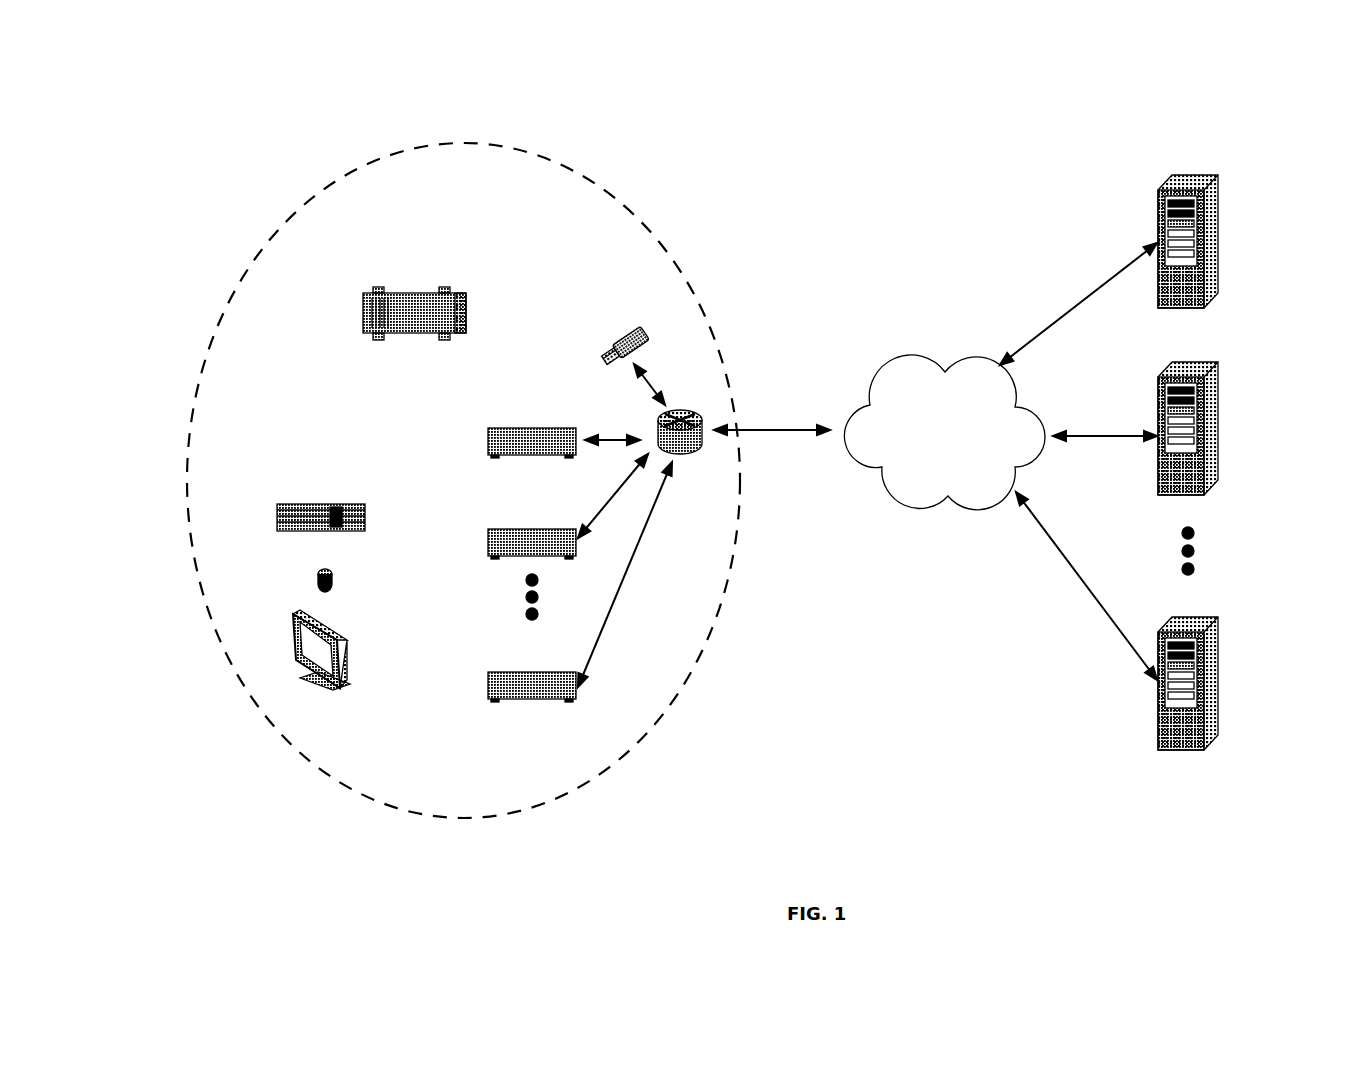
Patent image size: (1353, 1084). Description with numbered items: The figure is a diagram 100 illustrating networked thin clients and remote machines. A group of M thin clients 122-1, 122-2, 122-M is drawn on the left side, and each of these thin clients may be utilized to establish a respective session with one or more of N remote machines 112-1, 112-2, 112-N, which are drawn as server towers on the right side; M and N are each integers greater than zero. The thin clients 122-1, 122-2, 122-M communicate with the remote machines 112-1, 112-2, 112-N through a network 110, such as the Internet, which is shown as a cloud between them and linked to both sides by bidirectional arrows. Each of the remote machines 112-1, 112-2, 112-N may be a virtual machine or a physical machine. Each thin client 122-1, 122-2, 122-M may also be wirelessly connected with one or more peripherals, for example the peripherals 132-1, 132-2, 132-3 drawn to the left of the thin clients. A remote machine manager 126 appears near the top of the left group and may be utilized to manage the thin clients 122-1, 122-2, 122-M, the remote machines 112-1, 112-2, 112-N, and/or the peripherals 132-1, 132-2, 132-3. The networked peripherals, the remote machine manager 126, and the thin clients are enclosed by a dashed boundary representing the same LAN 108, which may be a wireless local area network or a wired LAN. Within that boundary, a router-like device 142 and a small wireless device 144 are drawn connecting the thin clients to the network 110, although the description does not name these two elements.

The diagram 100 is at (142, 124).
The LAN 108 is at (628, 210).
The network 110 is at (927, 360).
The remote machine 112-1 is at (1220, 213).
The remote machine 112-2 is at (1220, 417).
The remote machine 112-N is at (1218, 682).
The thin client 122-1 is at (522, 428).
The thin client 122-2 is at (522, 529).
The thin client 122-M is at (516, 672).
The remote machine manager 126 is at (468, 312).
The peripheral 132-1 is at (366, 517).
The peripheral 132-2 is at (334, 578).
The peripheral 132-3 is at (343, 648).
The router 142 is at (680, 408).
The USB device 144 is at (646, 336).